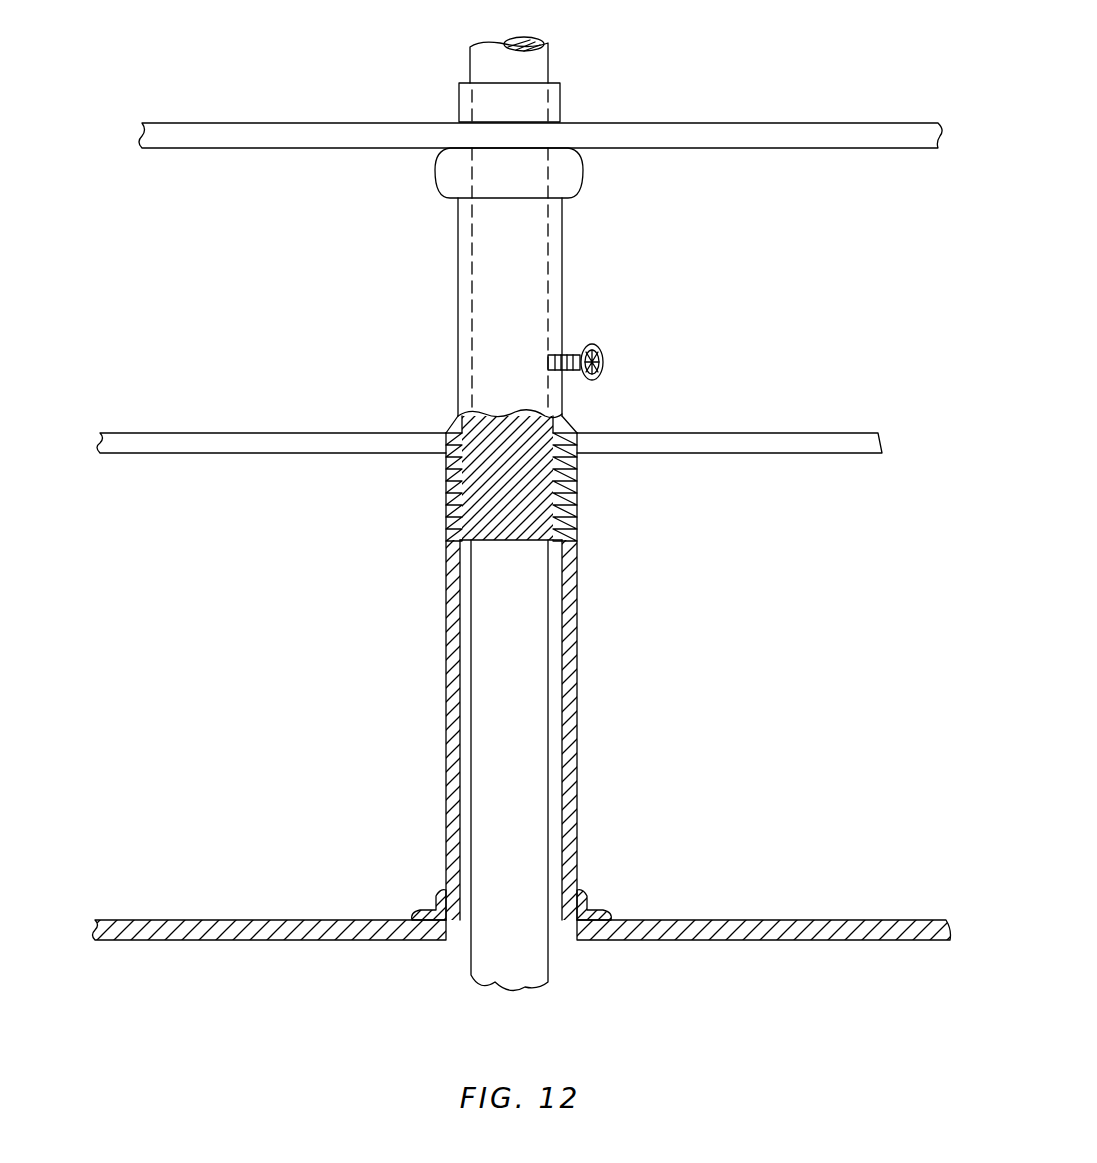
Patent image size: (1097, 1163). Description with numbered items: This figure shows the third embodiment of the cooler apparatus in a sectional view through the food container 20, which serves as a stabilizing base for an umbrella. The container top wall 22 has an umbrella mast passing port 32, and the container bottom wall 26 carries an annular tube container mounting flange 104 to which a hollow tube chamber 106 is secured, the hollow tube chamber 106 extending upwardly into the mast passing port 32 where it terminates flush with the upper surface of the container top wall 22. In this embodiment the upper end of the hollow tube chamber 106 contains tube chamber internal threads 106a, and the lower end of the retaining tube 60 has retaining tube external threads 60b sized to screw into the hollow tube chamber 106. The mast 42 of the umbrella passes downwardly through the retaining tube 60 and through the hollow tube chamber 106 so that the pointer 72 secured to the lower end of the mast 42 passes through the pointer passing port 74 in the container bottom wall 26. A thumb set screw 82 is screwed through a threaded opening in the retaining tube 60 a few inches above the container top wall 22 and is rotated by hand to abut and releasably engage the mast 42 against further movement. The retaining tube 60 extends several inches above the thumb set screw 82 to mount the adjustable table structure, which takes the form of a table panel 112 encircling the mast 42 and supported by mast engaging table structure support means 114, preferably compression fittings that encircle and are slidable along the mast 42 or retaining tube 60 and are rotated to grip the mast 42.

The food container 20 is at (827, 363).
The container top wall 22 is at (298, 432).
The container bottom wall 26 is at (200, 920).
The umbrella mast passing port 32 is at (580, 420).
The mast 42 is at (555, 58).
The retaining tube 60 is at (560, 103).
The retaining tube external threads 60b is at (560, 485).
The pointer 72 is at (480, 972).
The pointer passing port 74 is at (528, 930).
The thumb set screw 82 is at (600, 350).
The tube container mounting flange 104 is at (430, 890).
The hollow tube chamber 106 is at (577, 677).
The tube chamber internal threads 106a is at (530, 565).
The table panel 112 is at (832, 148).
The mast engaging table structure support means 114 is at (583, 172).